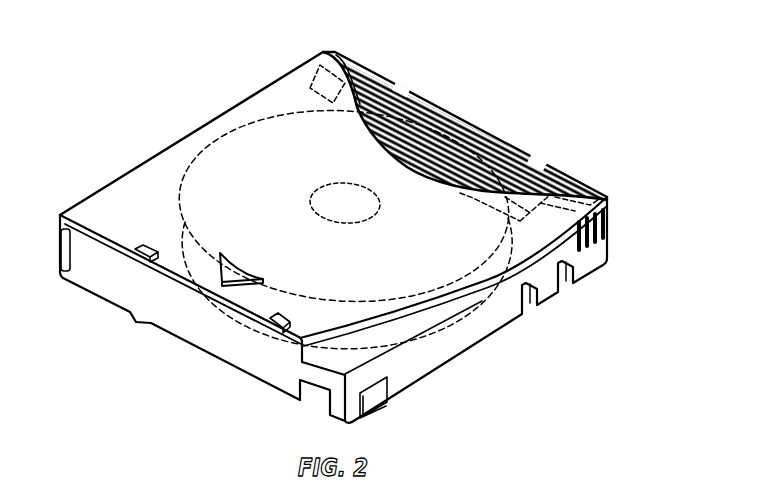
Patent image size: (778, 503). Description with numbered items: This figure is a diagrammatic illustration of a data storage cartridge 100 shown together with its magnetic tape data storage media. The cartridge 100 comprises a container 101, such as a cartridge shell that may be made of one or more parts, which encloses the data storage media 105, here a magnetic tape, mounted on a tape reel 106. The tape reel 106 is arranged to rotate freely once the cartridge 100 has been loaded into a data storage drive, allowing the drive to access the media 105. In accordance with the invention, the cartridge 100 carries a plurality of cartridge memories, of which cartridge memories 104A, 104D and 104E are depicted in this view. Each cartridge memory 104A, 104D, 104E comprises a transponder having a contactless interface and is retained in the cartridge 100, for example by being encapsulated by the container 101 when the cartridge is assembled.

The data storage cartridge 100 is at (527, 107).
The container 101 is at (481, 327).
The cartridge memory 104A is at (314, 62).
The cartridge memory 104D is at (540, 170).
The cartridge memory 104E is at (592, 196).
The data storage media 105 is at (180, 228).
The tape reel 106 is at (378, 210).